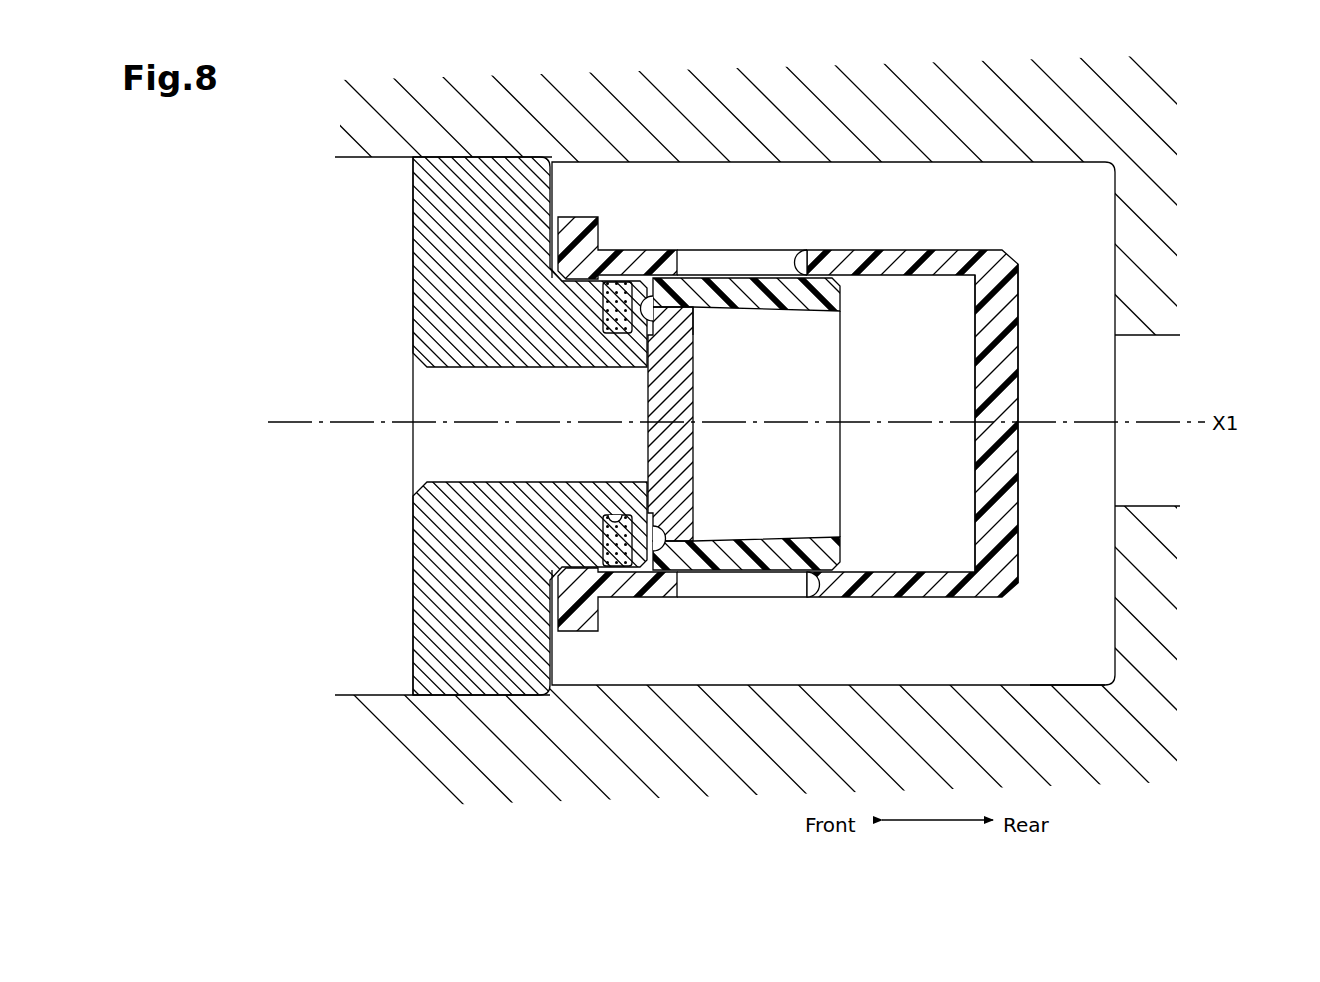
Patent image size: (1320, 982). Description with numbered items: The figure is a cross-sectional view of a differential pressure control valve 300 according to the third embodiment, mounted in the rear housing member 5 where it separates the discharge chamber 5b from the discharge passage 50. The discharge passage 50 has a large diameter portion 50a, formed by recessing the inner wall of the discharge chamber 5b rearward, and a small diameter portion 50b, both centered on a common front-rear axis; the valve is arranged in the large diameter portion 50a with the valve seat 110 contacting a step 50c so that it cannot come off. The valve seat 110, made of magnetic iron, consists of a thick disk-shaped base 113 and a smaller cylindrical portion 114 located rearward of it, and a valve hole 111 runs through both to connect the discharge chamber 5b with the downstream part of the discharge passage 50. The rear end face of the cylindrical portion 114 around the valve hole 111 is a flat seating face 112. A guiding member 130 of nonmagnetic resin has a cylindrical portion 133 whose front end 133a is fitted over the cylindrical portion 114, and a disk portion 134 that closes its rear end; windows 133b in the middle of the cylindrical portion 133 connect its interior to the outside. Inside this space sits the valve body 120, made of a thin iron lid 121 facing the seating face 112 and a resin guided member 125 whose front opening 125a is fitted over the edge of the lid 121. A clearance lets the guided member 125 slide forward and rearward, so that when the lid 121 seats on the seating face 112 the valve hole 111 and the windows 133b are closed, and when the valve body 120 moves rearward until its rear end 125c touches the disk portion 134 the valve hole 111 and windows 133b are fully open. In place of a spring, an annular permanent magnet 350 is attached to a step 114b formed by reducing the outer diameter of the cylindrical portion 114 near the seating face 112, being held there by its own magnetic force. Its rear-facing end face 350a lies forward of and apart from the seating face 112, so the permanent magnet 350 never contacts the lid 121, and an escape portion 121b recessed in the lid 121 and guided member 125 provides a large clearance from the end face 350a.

The rear housing member 5 is at (1156, 212).
The discharge chamber 5b is at (381, 649).
The discharge passage 50 is at (1162, 344).
The large diameter portion 50a is at (1028, 685).
The small diameter portion 50b is at (1143, 506).
The step 50c is at (522, 158).
The valve seat 110 is at (404, 240).
The valve hole 111 is at (470, 482).
The seating face 112 is at (660, 575).
The base 113 is at (497, 630).
The cylindrical portion 114 is at (582, 608).
The step 114b is at (595, 482).
The valve body 120 is at (717, 268).
The lid 121 is at (672, 422).
The escape portion 121b is at (695, 323).
The guided member 125 is at (794, 560).
The front opening 125a is at (697, 492).
The rear end 125c is at (840, 298).
The guiding member 130 is at (899, 419).
The cylindrical portion 133 is at (912, 268).
The front end 133a is at (583, 270).
The windows 133b is at (802, 262).
The disk portion 134 is at (1003, 346).
The differential pressure control valve 300 is at (1030, 242).
The permanent magnet 350 is at (617, 315).
The end face 350a is at (641, 333).